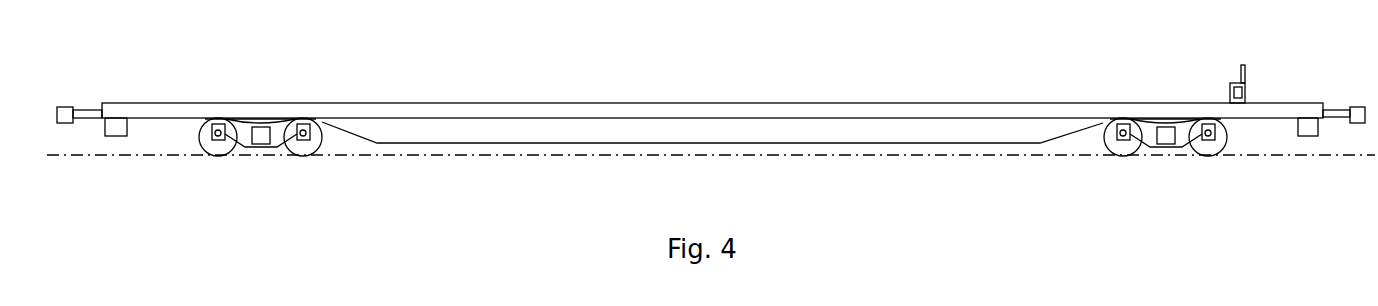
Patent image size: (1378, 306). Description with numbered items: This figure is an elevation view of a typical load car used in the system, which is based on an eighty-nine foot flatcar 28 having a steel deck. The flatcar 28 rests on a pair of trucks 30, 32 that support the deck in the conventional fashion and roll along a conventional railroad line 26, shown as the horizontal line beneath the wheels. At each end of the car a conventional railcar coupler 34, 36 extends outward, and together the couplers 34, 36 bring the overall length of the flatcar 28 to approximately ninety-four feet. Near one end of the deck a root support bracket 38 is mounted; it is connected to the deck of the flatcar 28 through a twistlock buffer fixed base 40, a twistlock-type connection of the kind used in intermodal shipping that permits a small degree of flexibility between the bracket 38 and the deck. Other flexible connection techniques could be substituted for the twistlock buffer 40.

The railroad line 26 is at (47, 157).
The flatcar 28 is at (708, 103).
The truck 30 is at (260, 145).
The truck 32 is at (1165, 145).
The railcar coupler 34 is at (63, 107).
The railcar coupler 36 is at (1358, 125).
The root support bracket 38 is at (1247, 73).
The twistlock buffer fixed base 40 is at (1232, 102).